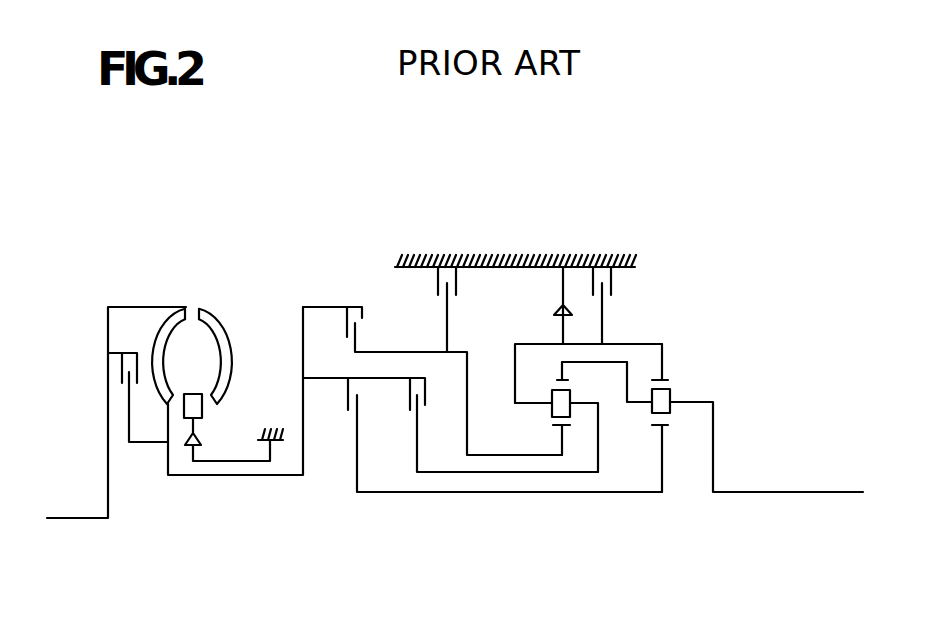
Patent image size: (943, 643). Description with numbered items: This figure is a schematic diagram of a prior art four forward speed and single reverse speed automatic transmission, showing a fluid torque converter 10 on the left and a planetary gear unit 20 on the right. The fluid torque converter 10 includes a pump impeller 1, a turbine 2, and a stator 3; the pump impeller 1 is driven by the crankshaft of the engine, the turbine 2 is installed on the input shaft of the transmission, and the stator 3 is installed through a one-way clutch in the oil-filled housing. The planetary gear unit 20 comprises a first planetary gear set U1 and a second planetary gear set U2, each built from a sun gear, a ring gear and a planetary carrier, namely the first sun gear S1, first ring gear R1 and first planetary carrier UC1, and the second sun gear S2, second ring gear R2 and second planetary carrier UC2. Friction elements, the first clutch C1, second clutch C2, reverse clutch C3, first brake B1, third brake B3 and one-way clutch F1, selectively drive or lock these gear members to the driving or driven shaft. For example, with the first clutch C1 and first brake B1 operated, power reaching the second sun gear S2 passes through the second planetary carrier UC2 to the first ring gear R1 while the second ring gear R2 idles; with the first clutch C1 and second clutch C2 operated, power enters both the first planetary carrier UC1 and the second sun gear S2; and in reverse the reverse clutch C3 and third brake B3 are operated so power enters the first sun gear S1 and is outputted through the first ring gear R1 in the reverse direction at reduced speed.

The pump impeller 1 is at (160, 326).
The turbine 2 is at (222, 332).
The stator 3 is at (186, 415).
The fluid torque converter 10 is at (162, 328).
The planetary gear unit 20 is at (583, 432).
The first clutch C1 is at (363, 405).
The second clutch C2 is at (425, 405).
The reverse clutch C3 is at (363, 325).
The first brake B1 is at (458, 288).
The third brake B3 is at (613, 288).
The one-way clutch F1 is at (558, 312).
The first ring gear R1 is at (558, 380).
The second ring gear R2 is at (657, 378).
The first planetary carrier UC1 is at (571, 395).
The second planetary carrier UC2 is at (675, 392).
The first sun gear S1 is at (567, 428).
The second sun gear S2 is at (665, 428).
The first planetary gear set U1 is at (539, 446).
The second planetary gear set U2 is at (720, 451).